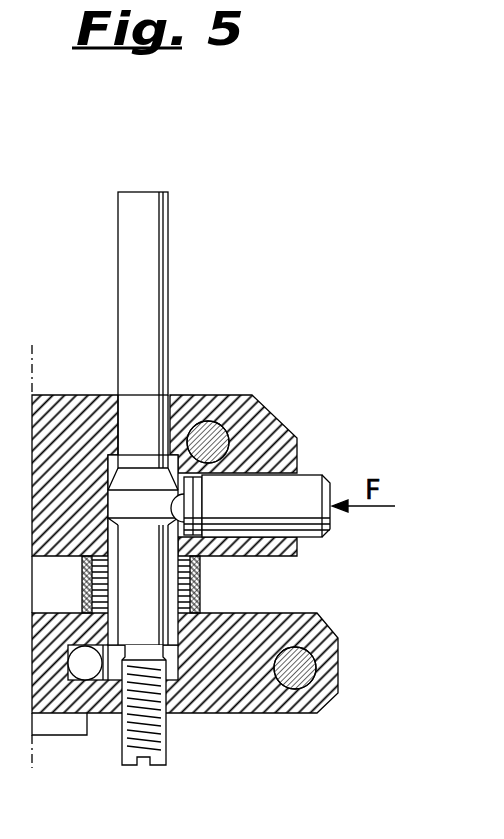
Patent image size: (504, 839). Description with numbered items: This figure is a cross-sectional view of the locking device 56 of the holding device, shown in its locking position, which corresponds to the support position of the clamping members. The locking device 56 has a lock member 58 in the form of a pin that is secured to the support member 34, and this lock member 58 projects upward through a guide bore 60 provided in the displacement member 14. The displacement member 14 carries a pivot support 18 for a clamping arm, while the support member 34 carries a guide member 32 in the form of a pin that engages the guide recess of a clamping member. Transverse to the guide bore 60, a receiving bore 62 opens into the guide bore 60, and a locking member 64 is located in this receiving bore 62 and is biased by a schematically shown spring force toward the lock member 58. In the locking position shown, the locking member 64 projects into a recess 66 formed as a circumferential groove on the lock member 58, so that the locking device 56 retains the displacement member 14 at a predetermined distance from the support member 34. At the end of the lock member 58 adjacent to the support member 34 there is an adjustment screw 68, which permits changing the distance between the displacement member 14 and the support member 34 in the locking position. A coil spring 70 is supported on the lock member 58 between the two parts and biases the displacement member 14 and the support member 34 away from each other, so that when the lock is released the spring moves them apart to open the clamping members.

The locking device 56 is at (330, 369).
The displacement member 14 is at (272, 412).
The pivot support 18 is at (208, 421).
The support member 34 is at (216, 688).
The guide member 32 is at (294, 688).
The coil spring 70 is at (205, 586).
The recess 66 is at (138, 507).
The lock member 58 is at (112, 292).
The guide bore 60 is at (121, 419).
The receiving bore 62 is at (272, 487).
The locking member 64 is at (300, 512).
The adjustment screw 68 is at (138, 748).